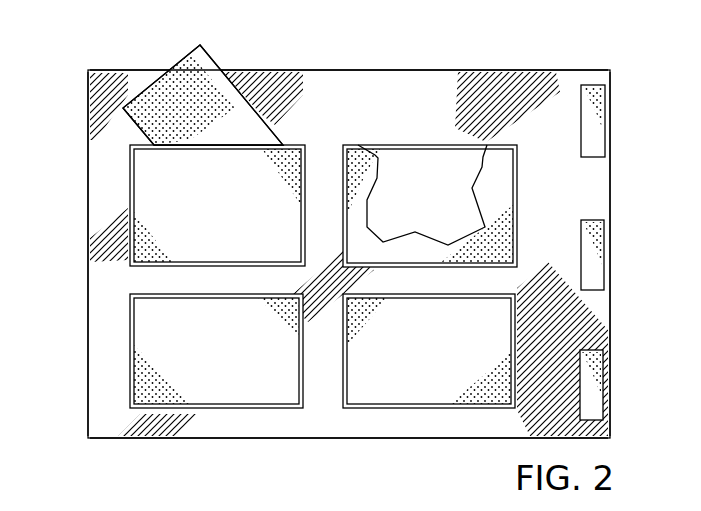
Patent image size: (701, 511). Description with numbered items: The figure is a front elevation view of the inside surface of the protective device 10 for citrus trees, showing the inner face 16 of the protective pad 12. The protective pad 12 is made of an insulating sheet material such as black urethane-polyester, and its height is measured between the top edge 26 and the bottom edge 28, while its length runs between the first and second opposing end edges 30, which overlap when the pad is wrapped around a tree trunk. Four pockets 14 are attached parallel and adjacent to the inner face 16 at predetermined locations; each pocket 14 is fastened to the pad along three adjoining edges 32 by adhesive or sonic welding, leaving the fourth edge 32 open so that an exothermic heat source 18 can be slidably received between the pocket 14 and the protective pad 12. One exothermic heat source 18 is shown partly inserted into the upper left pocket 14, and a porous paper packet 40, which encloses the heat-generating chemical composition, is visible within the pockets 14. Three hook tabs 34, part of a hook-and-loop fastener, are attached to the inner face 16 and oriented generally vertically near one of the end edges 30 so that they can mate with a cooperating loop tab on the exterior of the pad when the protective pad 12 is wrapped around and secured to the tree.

The protective device 10 is at (497, 47).
The protective pad 12 is at (98, 183).
The pockets 14 is at (343, 146).
The inner face 16 is at (556, 141).
The exothermic heat source 18 is at (222, 55).
The top edge 26 is at (323, 70).
The bottom edge 28 is at (320, 438).
The end edges 30 is at (88, 230).
The pocket edges 32 is at (128, 312).
The hook tab 34 is at (600, 133).
The porous paper packet 40 is at (160, 93).